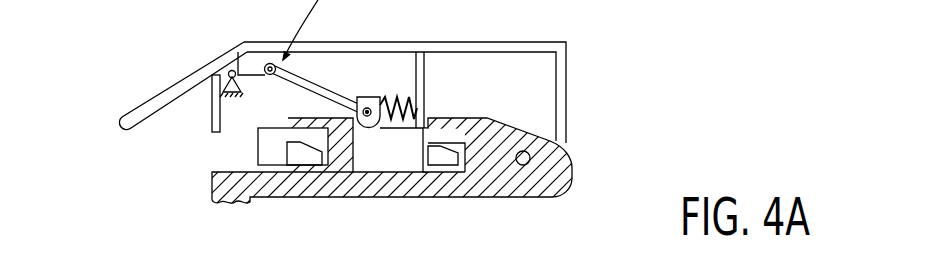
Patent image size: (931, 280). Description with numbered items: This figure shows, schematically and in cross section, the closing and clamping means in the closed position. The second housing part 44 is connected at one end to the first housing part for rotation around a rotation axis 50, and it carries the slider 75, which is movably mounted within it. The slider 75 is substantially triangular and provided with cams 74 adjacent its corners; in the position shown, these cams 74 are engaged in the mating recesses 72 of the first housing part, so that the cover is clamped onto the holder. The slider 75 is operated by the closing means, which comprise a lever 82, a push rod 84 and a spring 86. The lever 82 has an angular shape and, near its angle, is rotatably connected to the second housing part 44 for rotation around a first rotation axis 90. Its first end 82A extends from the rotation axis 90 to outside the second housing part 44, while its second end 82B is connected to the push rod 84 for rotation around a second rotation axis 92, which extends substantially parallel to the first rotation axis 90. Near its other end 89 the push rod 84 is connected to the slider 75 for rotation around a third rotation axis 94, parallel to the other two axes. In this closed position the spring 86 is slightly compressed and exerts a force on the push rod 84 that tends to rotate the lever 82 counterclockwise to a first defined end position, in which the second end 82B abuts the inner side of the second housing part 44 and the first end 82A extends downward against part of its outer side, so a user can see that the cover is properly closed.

The lever 82 is at (172, 93).
The first end of the lever 82A is at (135, 128).
The second end of the lever 82B is at (243, 65).
The first rotation axis 90 is at (217, 66).
The second rotation axis 92 is at (268, 63).
The push rod 84 is at (318, 82).
The other end of the push rod 89 is at (362, 92).
The third rotation axis 94 is at (370, 106).
The spring 86 is at (402, 100).
The second housing part 44 is at (523, 50).
The cam 74 is at (298, 158).
The recess 72 is at (325, 160).
The slider 75 is at (392, 158).
The rotation axis 50 is at (525, 166).